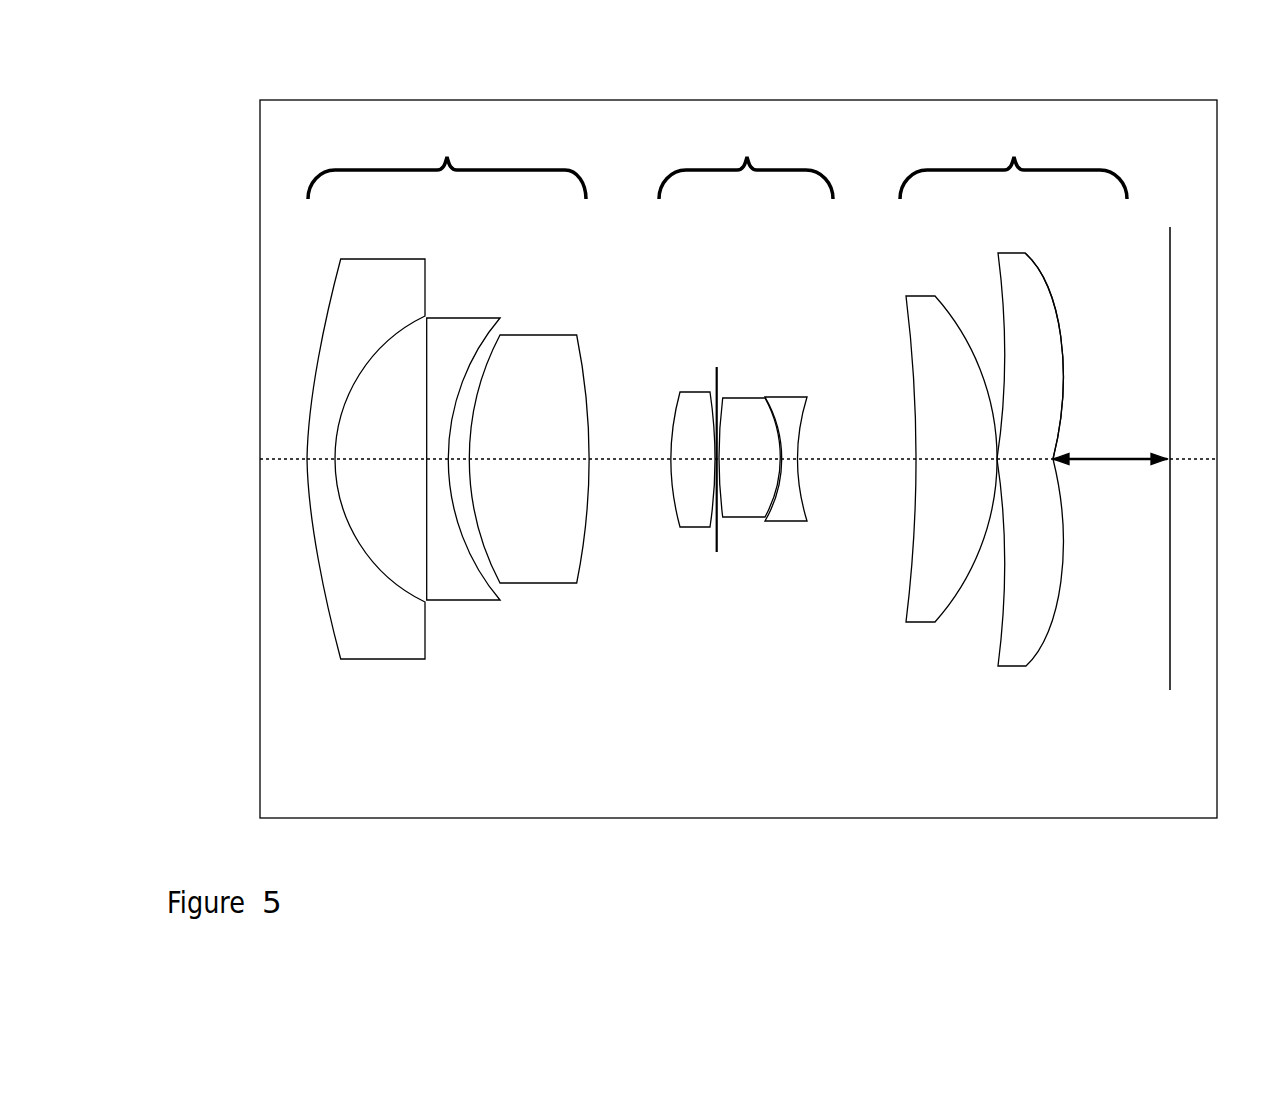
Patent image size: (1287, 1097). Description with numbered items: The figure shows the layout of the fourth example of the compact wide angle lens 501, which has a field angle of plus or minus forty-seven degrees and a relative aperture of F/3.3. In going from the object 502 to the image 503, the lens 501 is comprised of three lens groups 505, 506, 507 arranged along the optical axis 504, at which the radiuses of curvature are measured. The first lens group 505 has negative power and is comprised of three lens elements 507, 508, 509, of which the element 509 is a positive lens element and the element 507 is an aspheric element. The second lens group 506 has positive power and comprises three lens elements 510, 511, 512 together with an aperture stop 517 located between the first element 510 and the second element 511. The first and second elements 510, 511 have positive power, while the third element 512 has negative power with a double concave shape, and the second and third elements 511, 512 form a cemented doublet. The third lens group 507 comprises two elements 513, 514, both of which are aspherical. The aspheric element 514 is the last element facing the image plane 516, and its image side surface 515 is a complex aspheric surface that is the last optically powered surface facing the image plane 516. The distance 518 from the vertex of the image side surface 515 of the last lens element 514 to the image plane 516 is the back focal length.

The lens 501 is at (700, 862).
The object 502 is at (260, 467).
The image 503 is at (1217, 461).
The optical axis 504 is at (622, 468).
The first lens group 505 is at (447, 162).
The second lens group 506 is at (746, 162).
The third lens group 507 is at (717, 406).
The lens element 508 is at (467, 624).
The positive lens element 509 is at (529, 479).
The first element 510 is at (689, 482).
The second element 511 is at (733, 528).
The third element 512 is at (788, 544).
The aspherical element 513 is at (945, 480).
The aspheric element 514 is at (1025, 473).
The complex aspheric surface 515 is at (1085, 331).
The image plane 516 is at (1162, 701).
The aperture stop 517 is at (736, 351).
The distance 518 is at (1117, 481).